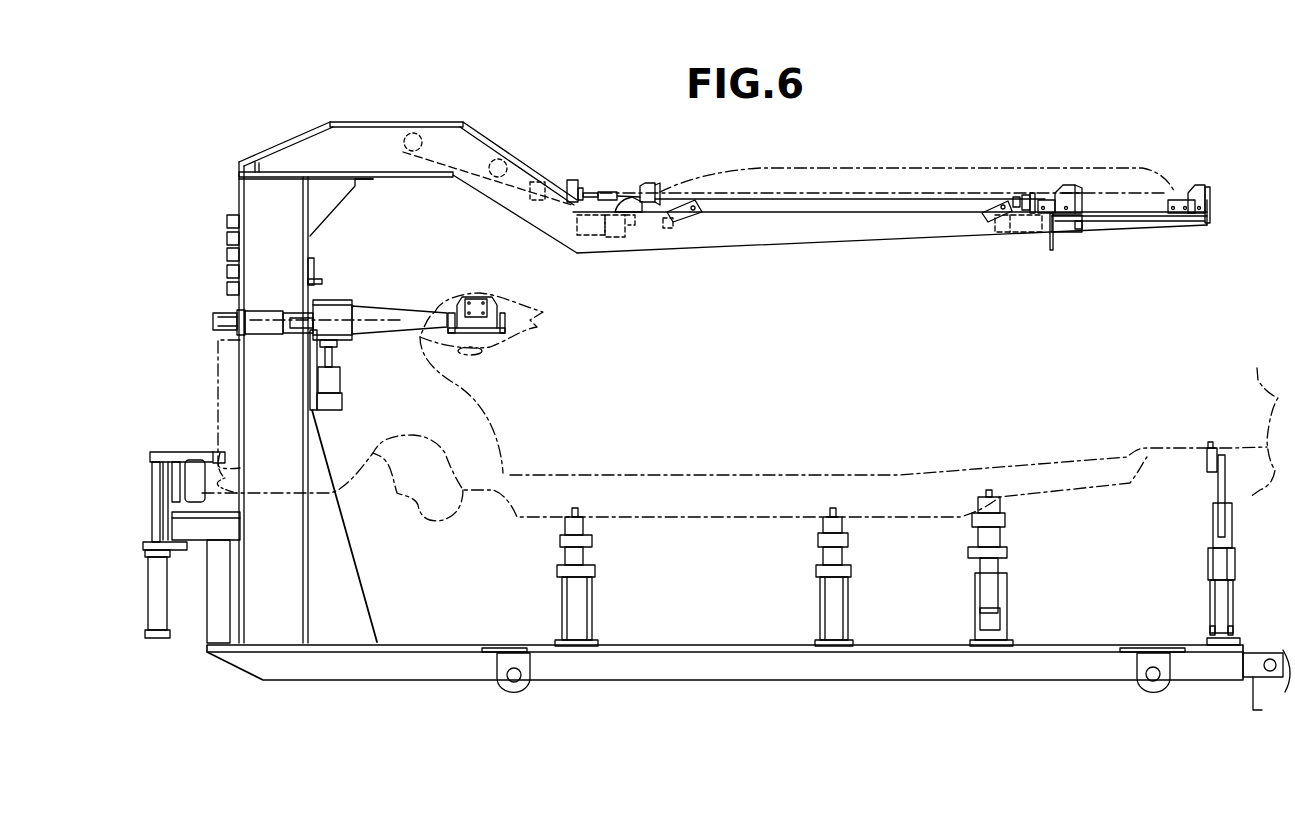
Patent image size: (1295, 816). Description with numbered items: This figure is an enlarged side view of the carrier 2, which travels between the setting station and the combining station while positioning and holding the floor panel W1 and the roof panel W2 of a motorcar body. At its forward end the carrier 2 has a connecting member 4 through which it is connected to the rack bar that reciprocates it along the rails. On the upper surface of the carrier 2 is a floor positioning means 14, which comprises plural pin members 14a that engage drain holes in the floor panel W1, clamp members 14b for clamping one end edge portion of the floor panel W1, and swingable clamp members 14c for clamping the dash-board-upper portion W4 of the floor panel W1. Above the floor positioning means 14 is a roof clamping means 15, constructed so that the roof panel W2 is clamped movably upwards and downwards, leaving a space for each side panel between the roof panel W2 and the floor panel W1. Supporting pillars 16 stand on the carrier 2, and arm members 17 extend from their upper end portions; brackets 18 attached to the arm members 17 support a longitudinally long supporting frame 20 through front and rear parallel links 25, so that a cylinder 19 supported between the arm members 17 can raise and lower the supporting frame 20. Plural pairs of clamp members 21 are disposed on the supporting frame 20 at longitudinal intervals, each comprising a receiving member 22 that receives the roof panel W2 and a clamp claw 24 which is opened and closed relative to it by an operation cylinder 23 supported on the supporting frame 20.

The carrier 2 is at (705, 656).
The connecting member 4 is at (1286, 655).
The floor positioning means 14 is at (520, 557).
The pin members 14a is at (578, 508).
The clamp members 14b is at (193, 455).
The swingable clamp members 14c is at (472, 298).
The roof clamping means 15 is at (594, 160).
The supporting pillars 16 is at (262, 378).
The arm members 17 is at (373, 140).
The brackets 18 is at (826, 235).
The cylinder 19 is at (566, 180).
The supporting frame 20 is at (900, 208).
The clamp members 21 is at (656, 178).
The receiving member 22 is at (658, 195).
The operation cylinder 23 is at (608, 245).
The clamp claw 24 is at (649, 187).
The parallel links 25 is at (690, 215).
The floor panel W1 is at (728, 505).
The roof panel W2 is at (832, 168).
The dash-board-upper portion W4 is at (543, 312).